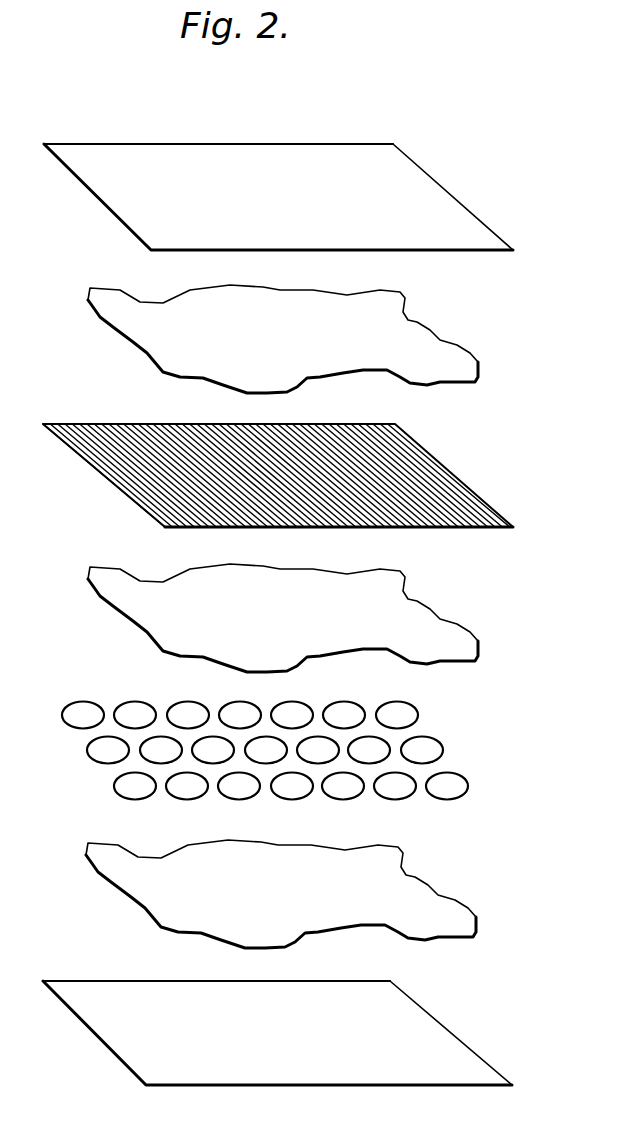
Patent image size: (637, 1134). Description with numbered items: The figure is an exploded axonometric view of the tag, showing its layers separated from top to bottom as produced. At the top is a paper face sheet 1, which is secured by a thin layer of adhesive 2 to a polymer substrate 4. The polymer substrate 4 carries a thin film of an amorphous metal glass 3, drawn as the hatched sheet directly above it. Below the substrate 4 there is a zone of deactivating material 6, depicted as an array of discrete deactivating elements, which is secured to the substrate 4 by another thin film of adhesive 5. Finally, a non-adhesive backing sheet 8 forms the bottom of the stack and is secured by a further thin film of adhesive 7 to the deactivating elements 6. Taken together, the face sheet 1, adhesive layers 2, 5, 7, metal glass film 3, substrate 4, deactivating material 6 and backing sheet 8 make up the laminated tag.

The paper face sheet 1 is at (442, 193).
The layer of adhesive 2 is at (407, 332).
The thin film of amorphous metal glass 3 is at (422, 473).
The polymer substrate 4 is at (460, 528).
The thin film of adhesive 5 is at (425, 617).
The deactivating material 6 is at (400, 712).
The thin film of adhesive 7 is at (418, 893).
The non-adhesive backing sheet 8 is at (432, 1037).